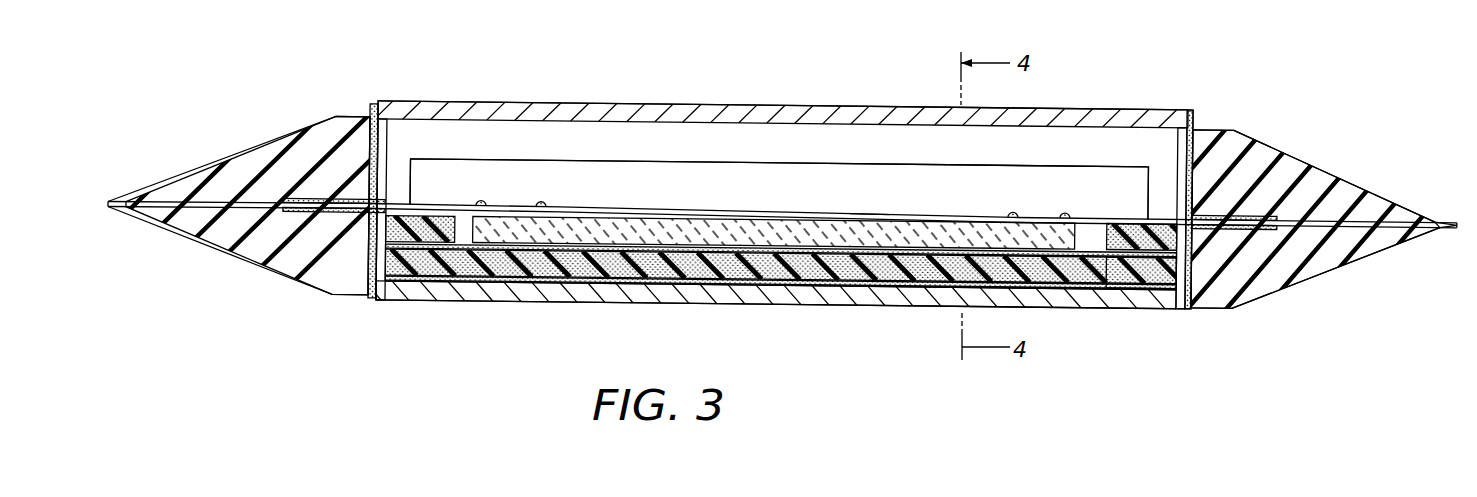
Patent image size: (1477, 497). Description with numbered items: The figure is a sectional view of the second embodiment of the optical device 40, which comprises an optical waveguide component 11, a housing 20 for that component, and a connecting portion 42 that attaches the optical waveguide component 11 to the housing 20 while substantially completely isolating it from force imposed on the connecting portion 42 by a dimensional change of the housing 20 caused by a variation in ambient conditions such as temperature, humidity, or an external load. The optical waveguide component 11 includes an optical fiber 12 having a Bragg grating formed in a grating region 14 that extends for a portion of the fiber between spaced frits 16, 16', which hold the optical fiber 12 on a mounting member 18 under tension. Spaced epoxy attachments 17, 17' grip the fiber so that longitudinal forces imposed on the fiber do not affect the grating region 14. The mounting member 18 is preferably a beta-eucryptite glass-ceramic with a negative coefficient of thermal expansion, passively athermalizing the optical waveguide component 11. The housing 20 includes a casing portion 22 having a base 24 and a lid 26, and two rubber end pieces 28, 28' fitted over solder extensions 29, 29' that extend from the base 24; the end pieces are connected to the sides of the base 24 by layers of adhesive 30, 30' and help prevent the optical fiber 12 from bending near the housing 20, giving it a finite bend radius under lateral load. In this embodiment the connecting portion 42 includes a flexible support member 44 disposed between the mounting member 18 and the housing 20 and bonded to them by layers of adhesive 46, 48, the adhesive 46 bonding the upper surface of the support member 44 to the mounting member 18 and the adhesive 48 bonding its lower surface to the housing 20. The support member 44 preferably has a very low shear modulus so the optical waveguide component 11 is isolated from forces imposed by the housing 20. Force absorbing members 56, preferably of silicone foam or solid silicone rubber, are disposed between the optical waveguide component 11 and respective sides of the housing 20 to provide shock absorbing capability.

The optical waveguide component 11 is at (869, 202).
The optical fiber 12 is at (1132, 228).
The grating region 14 is at (792, 212).
The frit 16 is at (560, 189).
The frit 16' is at (997, 200).
The epoxy attachment 17 is at (483, 189).
The epoxy attachment 17' is at (1072, 201).
The mounting member 18 is at (680, 233).
The housing 20 is at (346, 341).
The casing portion 22 is at (451, 320).
The base 24 is at (563, 297).
The lid 26 is at (423, 105).
The rubber end piece 28 is at (252, 205).
The rubber end piece 28' is at (1270, 222).
The solder extension 29 is at (352, 172).
The solder extension 29' is at (1278, 188).
The adhesive layer 30 is at (357, 188).
The adhesive layer 30' is at (1210, 197).
The optical device 40 is at (1103, 86).
The connecting portion 42 is at (1163, 285).
The flexible support member 44 is at (1062, 284).
The adhesive layer 46 is at (590, 245).
The adhesive layer 48 is at (667, 262).
The force absorbing member 56 is at (462, 172).